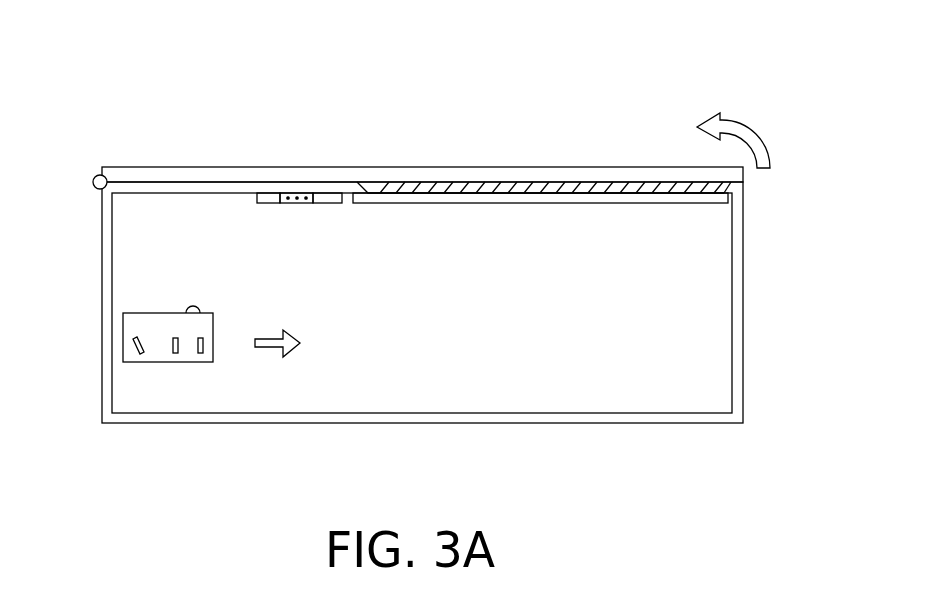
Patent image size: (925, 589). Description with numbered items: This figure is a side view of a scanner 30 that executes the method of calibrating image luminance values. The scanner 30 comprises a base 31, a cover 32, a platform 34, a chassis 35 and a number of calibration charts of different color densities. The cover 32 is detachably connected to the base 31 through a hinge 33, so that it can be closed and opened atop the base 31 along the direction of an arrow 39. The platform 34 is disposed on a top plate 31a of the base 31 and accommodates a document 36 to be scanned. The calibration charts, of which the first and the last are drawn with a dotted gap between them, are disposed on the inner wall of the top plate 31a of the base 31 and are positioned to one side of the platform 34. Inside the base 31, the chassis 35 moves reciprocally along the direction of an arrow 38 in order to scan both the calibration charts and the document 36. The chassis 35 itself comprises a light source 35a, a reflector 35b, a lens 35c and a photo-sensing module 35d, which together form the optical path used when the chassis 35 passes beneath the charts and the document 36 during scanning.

The scanner 30 is at (813, 36).
The base 31 is at (743, 337).
The top plate 31a is at (724, 193).
The cover 32 is at (640, 177).
The hinge 33 is at (92, 182).
The platform 34 is at (650, 200).
The chassis 35 is at (123, 338).
The light source 35a is at (188, 306).
The reflector 35b is at (134, 355).
The lens 35c is at (176, 355).
The photo-sensing module 35d is at (201, 355).
The document 36 is at (490, 192).
The arrow 38 is at (272, 347).
The arrow 39 is at (748, 132).